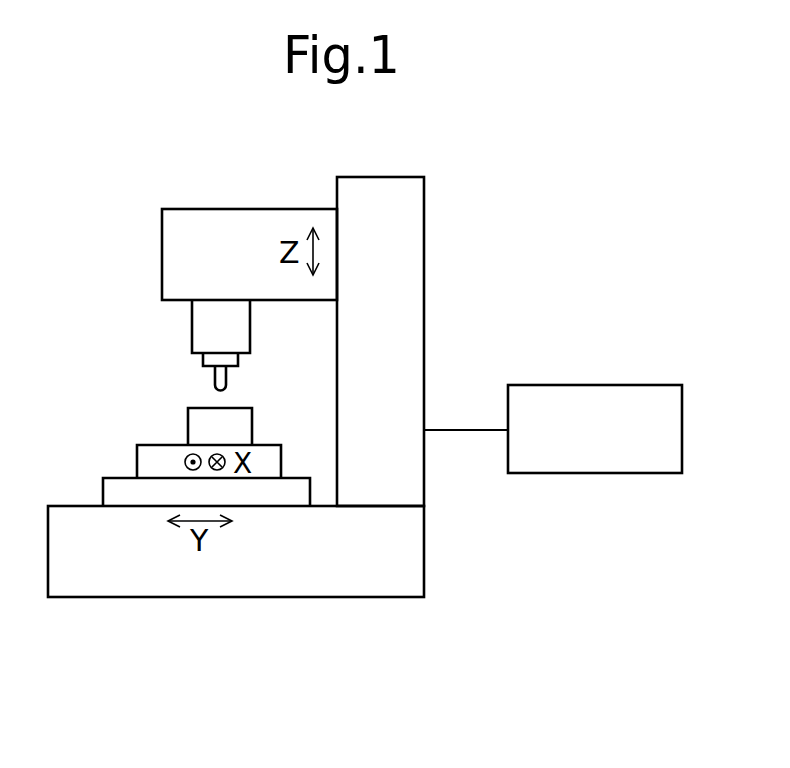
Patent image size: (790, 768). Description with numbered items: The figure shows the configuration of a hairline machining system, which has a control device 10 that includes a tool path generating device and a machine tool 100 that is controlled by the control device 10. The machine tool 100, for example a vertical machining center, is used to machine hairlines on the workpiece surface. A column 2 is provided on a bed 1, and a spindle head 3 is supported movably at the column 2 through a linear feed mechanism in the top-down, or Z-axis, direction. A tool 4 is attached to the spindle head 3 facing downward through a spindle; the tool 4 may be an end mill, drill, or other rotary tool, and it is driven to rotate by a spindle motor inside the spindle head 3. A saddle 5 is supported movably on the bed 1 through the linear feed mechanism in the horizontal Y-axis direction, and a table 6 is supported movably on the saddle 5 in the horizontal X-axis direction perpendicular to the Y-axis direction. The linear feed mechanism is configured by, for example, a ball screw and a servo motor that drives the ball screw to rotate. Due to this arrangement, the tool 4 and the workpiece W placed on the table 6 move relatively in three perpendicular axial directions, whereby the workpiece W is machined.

The machine tool 100 is at (452, 187).
The bed 1 is at (145, 597).
The column 2 is at (424, 243).
The spindle head 3 is at (162, 233).
The tool 4 is at (213, 376).
The saddle 5 is at (103, 490).
The table 6 is at (137, 457).
The workpiece W is at (188, 422).
The control device 10 is at (565, 474).